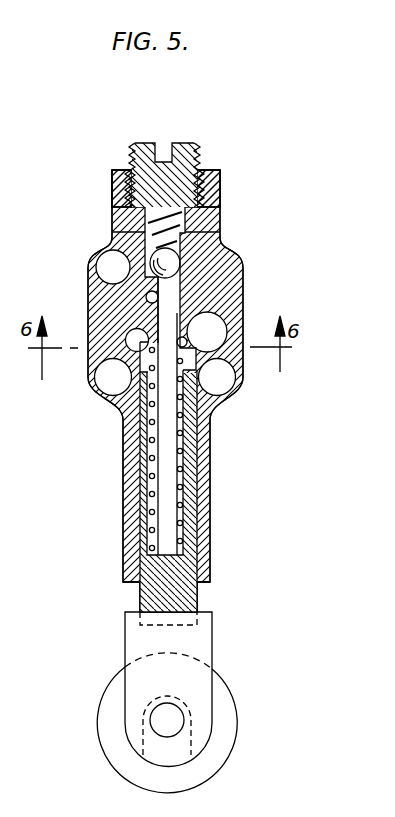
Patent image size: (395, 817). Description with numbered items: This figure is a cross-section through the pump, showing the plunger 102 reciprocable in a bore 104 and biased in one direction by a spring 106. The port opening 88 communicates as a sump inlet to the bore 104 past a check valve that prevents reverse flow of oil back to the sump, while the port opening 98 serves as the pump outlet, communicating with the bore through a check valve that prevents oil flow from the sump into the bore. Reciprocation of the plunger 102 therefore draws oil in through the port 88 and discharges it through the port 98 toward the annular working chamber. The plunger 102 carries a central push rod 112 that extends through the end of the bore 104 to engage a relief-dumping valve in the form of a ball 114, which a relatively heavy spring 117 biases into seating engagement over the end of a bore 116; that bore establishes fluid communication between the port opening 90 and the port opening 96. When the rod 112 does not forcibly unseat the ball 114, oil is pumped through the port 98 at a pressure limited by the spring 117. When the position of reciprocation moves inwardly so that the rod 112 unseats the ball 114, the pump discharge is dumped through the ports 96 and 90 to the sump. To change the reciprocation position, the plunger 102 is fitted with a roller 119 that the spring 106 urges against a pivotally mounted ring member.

The port opening 88 is at (206, 333).
The port opening 90 is at (133, 250).
The port opening 96 is at (148, 298).
The port opening 98 is at (140, 346).
The plunger 102 is at (195, 462).
The bore 104 is at (190, 361).
The spring 106 is at (184, 433).
The central push rod 112 is at (163, 496).
The ball 114 is at (178, 250).
The bore 116 is at (212, 280).
The spring 117 is at (183, 226).
The roller 119 is at (232, 747).